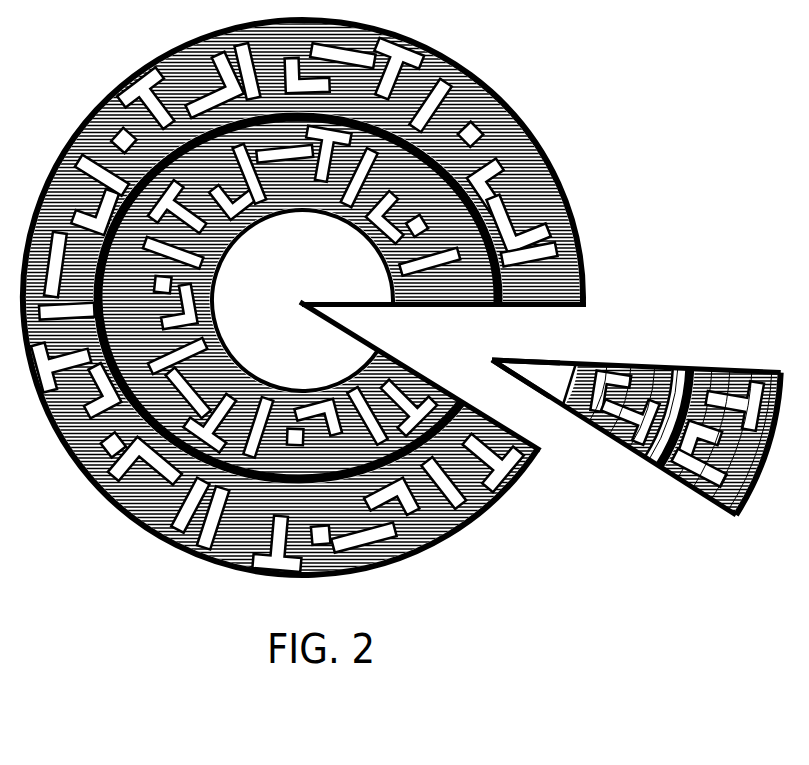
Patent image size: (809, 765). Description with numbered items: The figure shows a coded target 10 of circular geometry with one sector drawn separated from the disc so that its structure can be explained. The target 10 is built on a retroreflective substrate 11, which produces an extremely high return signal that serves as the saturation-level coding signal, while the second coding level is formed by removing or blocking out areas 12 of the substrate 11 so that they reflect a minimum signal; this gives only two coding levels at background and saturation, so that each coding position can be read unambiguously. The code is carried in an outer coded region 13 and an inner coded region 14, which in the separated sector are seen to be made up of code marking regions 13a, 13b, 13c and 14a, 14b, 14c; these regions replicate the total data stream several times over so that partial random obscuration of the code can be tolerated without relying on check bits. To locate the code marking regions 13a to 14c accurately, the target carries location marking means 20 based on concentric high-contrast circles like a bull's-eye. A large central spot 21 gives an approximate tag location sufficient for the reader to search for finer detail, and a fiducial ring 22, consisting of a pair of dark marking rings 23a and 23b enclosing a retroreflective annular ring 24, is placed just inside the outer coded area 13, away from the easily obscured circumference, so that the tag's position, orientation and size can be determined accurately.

The coded target 10 is at (86, 484).
The retroreflective substrate 11 is at (368, 300).
The removed or blocked-out areas 12 is at (455, 306).
The outer coded region 13 is at (681, 377).
The code marking region 13a is at (773, 372).
The code marking region 13b is at (753, 371).
The code marking region 13c is at (731, 370).
The inner coded region 14 is at (677, 363).
The code marking region 14a is at (656, 366).
The code marking region 14b is at (632, 365).
The code marking region 14c is at (608, 364).
The location marking means 20 is at (532, 416).
The large central spot 21 is at (508, 400).
The ring 22 is at (683, 517).
The dark marking ring 23a is at (678, 367).
The dark marking ring 23b is at (713, 369).
The retroreflective annular ring 24 is at (694, 368).